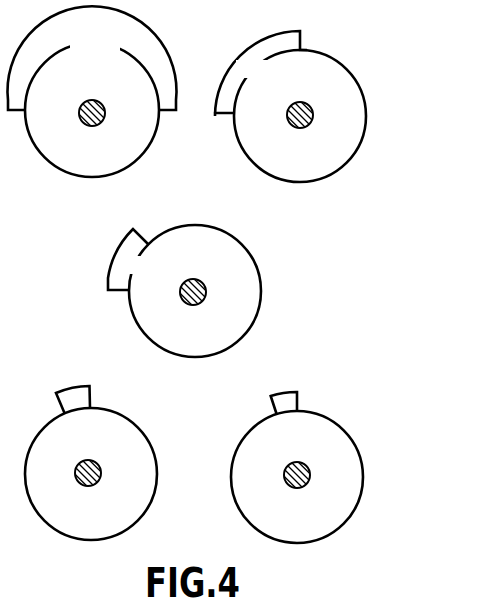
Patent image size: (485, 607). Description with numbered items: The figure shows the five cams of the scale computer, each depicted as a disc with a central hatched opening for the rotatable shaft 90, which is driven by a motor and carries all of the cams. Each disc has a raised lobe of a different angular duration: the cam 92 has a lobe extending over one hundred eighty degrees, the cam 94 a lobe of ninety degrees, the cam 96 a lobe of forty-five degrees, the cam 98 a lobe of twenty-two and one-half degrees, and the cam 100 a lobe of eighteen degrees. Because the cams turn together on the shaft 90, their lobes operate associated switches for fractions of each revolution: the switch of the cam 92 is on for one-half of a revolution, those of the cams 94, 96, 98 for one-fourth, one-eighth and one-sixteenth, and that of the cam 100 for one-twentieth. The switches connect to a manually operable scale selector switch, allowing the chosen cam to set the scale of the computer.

The rotatable shaft 90 is at (100, 104).
The cam 92 is at (137, 151).
The cam 94 is at (347, 153).
The cam 96 is at (253, 273).
The cam 98 is at (143, 462).
The cam 100 is at (350, 465).